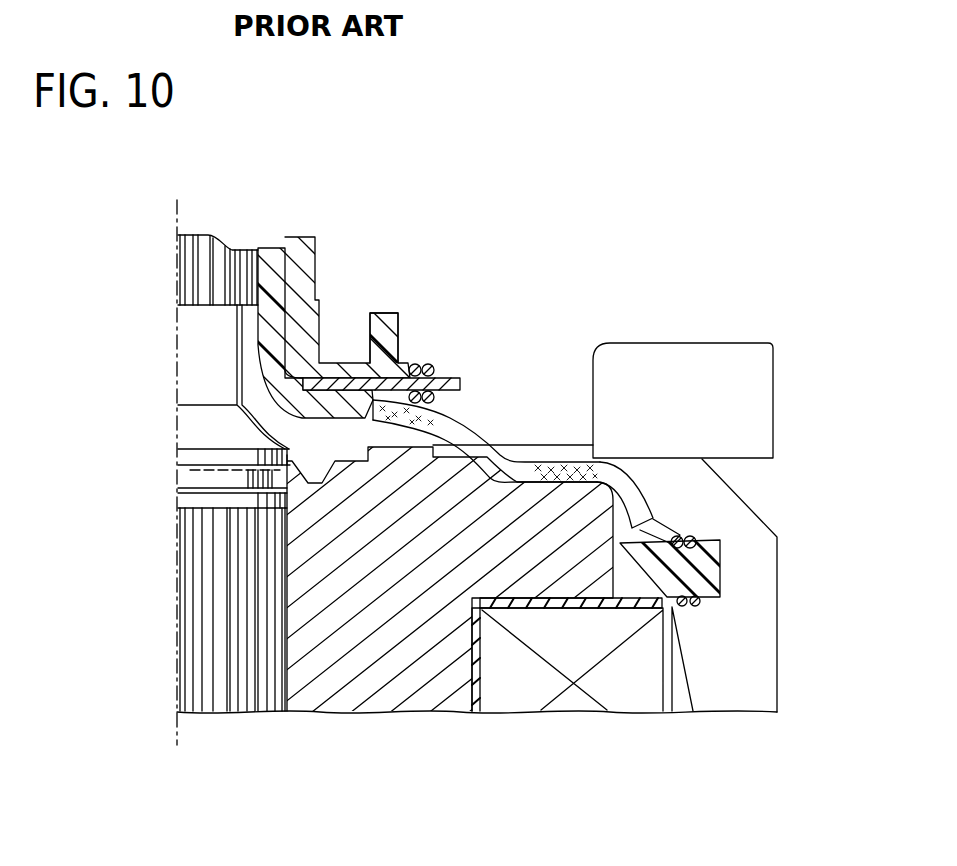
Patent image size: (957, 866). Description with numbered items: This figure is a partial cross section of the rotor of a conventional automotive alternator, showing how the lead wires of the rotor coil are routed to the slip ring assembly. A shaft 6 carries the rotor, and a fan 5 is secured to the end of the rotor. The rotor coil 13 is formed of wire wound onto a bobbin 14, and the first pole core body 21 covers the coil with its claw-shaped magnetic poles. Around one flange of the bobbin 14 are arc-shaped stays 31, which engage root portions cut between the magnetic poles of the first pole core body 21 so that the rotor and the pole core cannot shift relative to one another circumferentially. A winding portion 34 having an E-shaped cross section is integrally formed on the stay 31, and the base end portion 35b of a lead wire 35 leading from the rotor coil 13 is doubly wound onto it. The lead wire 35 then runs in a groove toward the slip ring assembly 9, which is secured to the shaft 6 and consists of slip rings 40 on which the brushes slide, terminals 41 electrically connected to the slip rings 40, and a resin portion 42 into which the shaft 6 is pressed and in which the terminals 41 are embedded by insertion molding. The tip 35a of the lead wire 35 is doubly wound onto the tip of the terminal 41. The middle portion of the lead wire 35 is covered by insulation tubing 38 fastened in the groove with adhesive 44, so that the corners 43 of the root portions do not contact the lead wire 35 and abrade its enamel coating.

The fan 5 is at (638, 360).
The shaft 6 is at (222, 650).
The slip ring assembly 9 is at (360, 283).
The rotor coil 13 is at (568, 702).
The bobbin 14 is at (471, 680).
The first pole core body 21 is at (350, 680).
The stay 31 is at (665, 603).
The winding portion 34 is at (705, 572).
The lead wire 35 is at (658, 527).
The tip of lead wire 35a is at (425, 360).
The base end portion of lead wire 35b is at (683, 537).
The insulation tubing 38 is at (455, 420).
The slip ring 40 is at (309, 258).
The terminal 41 is at (458, 377).
The resin portion 42 is at (403, 318).
The corner of root portion 43 is at (640, 497).
The adhesive 44 is at (568, 462).